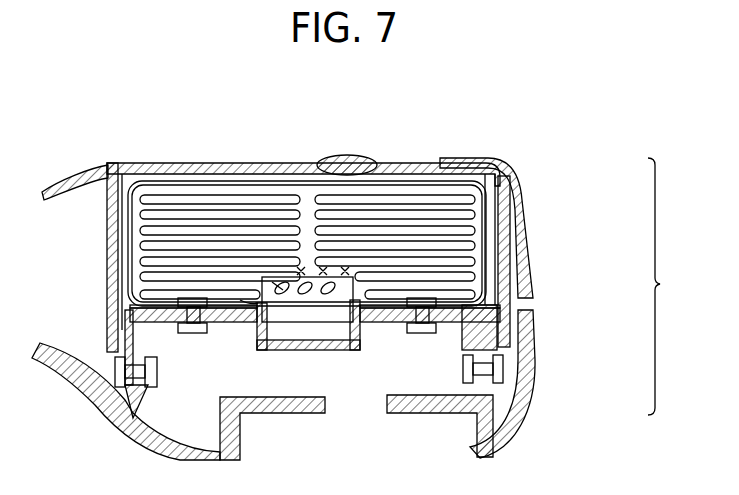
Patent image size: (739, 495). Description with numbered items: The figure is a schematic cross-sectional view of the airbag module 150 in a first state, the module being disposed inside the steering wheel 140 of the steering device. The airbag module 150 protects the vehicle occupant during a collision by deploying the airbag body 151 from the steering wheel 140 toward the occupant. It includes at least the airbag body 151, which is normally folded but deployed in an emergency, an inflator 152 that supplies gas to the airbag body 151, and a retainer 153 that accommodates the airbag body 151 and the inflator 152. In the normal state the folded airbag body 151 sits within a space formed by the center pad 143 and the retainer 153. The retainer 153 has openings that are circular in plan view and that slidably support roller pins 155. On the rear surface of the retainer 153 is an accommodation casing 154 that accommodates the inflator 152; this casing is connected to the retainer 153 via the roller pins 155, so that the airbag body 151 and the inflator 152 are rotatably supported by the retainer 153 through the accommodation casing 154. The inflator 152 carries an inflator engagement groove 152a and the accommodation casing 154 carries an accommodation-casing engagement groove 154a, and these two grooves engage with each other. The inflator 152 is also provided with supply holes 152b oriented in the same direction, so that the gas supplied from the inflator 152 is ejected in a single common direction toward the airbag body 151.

The steering wheel 140 is at (421, 150).
The center pad 143 is at (478, 167).
The airbag module 150 is at (673, 286).
The airbag body 151 is at (453, 224).
The inflator 152 is at (363, 287).
The inflator engagement groove 152a is at (258, 303).
The supply holes 152b is at (281, 287).
The retainer 153 is at (485, 309).
The accommodation casing 154 is at (360, 342).
The accommodation-casing engagement groove 154a is at (308, 328).
The roller pins 155 is at (195, 335).